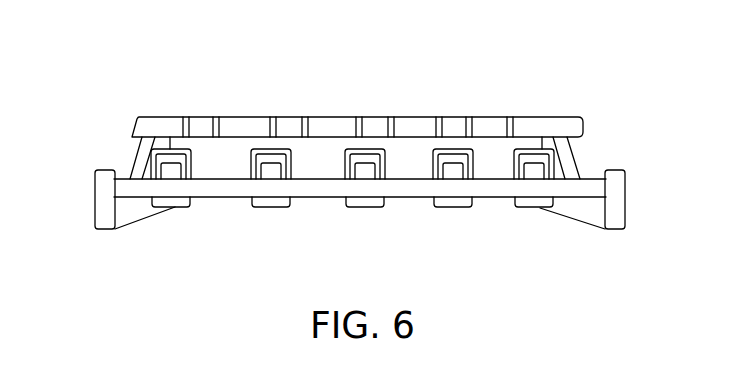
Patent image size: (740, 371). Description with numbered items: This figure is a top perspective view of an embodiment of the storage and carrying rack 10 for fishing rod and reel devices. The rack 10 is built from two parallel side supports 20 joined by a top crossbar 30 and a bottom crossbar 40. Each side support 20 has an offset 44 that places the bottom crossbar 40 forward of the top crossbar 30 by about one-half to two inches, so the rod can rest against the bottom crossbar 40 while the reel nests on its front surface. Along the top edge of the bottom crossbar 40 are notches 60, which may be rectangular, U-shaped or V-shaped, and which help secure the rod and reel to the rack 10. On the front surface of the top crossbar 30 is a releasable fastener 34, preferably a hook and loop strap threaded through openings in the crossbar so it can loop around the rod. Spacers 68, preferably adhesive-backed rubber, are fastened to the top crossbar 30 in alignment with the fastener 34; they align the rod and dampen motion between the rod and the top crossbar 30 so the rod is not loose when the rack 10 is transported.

The storage and carrying rack 10 is at (544, 52).
The side support 20 is at (103, 202).
The top crossbar 30 is at (207, 190).
The releasable fastener 34 is at (277, 208).
The bottom crossbar 40 is at (553, 119).
The offset 44 is at (566, 158).
The notch 60 is at (207, 122).
The spacer 68 is at (453, 181).